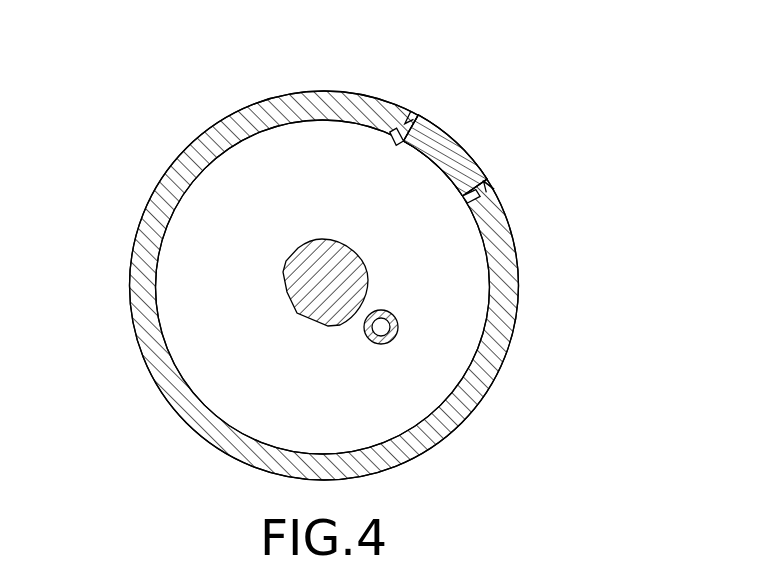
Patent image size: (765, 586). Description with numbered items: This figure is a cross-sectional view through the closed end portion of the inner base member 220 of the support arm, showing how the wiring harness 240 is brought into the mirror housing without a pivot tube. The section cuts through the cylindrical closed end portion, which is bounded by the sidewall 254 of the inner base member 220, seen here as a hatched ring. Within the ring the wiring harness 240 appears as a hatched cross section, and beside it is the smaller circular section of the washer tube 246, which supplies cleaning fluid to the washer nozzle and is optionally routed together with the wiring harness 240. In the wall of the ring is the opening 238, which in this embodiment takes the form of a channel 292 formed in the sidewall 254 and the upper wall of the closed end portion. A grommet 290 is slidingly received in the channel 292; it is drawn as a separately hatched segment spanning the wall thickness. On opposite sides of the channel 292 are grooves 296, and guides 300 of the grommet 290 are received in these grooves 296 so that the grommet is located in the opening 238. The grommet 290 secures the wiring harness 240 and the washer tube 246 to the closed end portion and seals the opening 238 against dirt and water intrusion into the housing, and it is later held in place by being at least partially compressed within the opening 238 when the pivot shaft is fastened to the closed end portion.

The inner base member 220 is at (163, 178).
The sidewall 254 is at (329, 91).
The opening 238 is at (418, 117).
The grommet 290 is at (457, 143).
The channel 292 is at (488, 174).
The guides 300 is at (412, 114).
The grooves 296 is at (400, 136).
The wiring harness 240 is at (320, 239).
The washer tube 246 is at (375, 344).